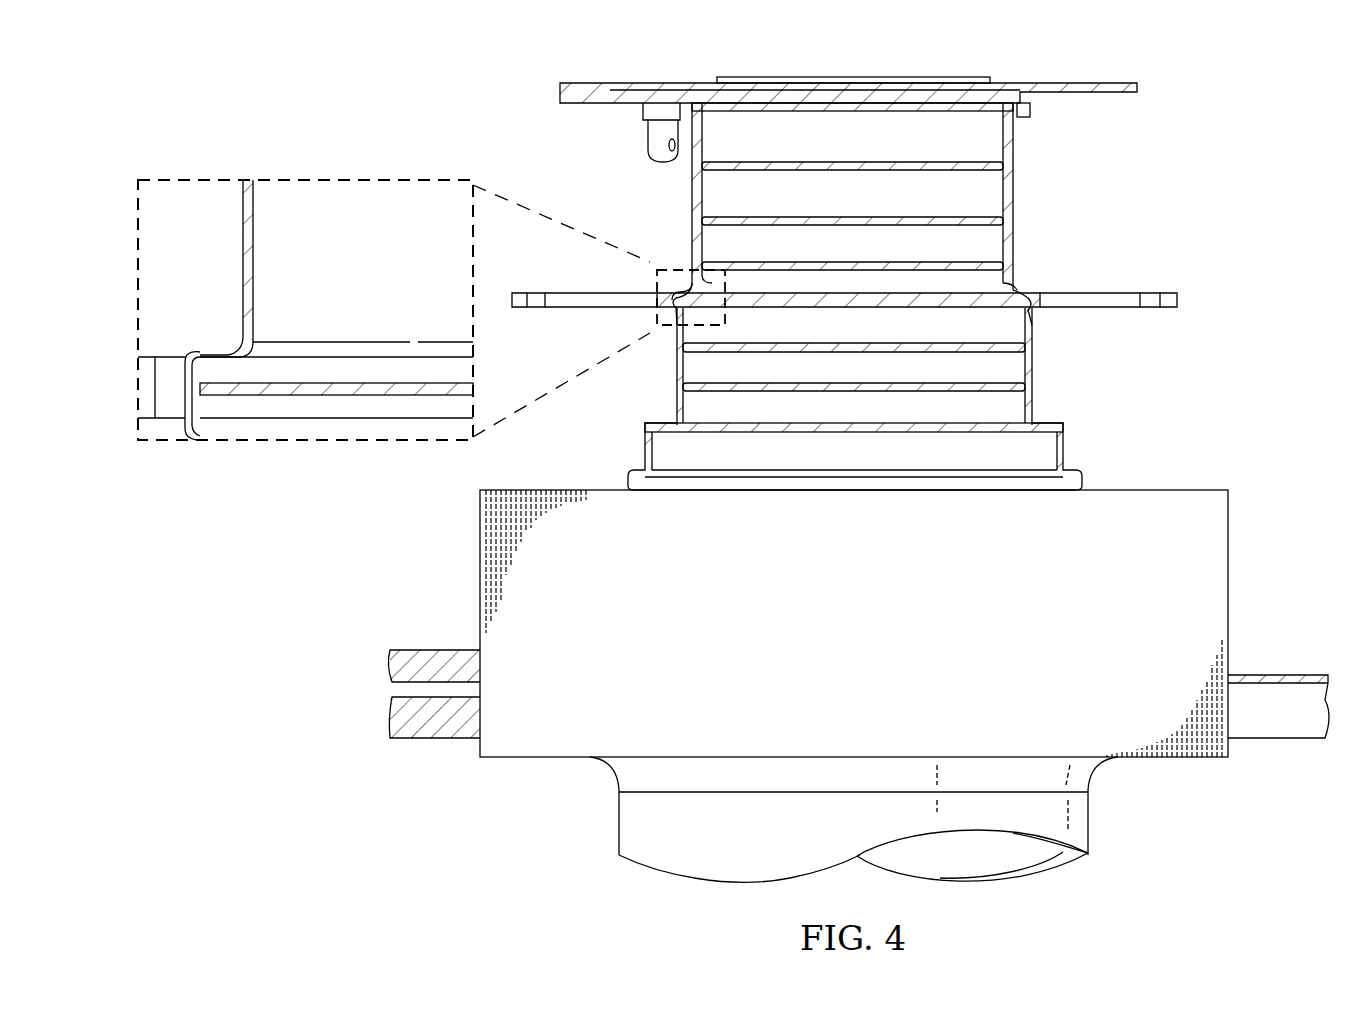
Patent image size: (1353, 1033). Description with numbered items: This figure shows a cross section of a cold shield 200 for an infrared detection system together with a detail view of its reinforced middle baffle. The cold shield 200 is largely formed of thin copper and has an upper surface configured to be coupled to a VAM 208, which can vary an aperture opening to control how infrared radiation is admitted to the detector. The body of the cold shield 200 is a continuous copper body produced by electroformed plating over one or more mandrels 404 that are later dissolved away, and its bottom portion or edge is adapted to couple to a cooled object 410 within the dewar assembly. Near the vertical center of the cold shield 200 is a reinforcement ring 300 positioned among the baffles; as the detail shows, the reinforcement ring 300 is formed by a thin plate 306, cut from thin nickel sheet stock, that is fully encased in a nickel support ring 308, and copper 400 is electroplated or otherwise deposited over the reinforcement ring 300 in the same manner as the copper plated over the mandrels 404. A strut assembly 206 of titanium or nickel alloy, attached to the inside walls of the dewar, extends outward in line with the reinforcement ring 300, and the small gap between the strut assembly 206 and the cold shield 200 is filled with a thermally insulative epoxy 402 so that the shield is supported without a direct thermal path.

The cold shield 200 is at (842, 261).
The strut assembly 206 is at (1160, 308).
The VAM 208 is at (645, 83).
The reinforcement ring 300 is at (403, 343).
The thin plate 306 is at (282, 383).
The support ring 308 is at (190, 355).
The copper 400 is at (243, 232).
The thermally insulative epoxy 402 is at (1050, 297).
The mandrel 404 is at (893, 112).
The cooled object 410 is at (1178, 757).